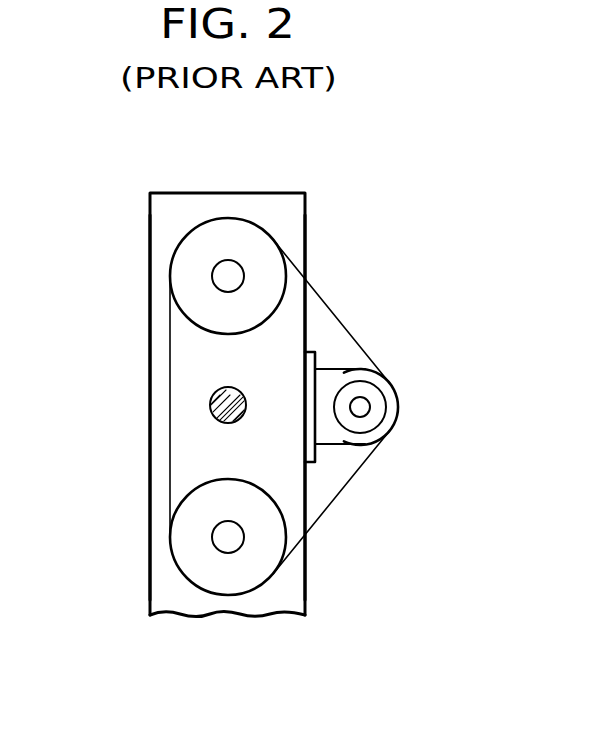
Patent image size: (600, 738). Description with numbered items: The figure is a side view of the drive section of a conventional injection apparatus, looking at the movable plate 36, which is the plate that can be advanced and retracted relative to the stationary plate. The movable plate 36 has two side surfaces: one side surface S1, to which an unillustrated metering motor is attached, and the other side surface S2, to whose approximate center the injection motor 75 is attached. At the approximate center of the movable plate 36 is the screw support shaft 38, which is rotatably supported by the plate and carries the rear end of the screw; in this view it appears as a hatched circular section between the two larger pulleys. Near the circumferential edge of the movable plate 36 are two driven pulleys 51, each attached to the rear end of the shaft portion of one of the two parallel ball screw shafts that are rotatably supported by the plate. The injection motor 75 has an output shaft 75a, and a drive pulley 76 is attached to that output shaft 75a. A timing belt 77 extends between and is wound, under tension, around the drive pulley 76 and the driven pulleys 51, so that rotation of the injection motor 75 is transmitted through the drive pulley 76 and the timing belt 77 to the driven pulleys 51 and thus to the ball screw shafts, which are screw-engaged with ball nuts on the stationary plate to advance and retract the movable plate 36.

The movable plate 36 is at (298, 191).
The driven pulley 51 is at (258, 242).
The one side surface S1 is at (150, 250).
The other side surface S2 is at (306, 255).
The screw support shaft 38 is at (211, 407).
The injection motor 75 is at (393, 384).
The drive pulley 76 is at (380, 410).
The output shaft 75a is at (360, 408).
The timing belt 77 is at (327, 498).